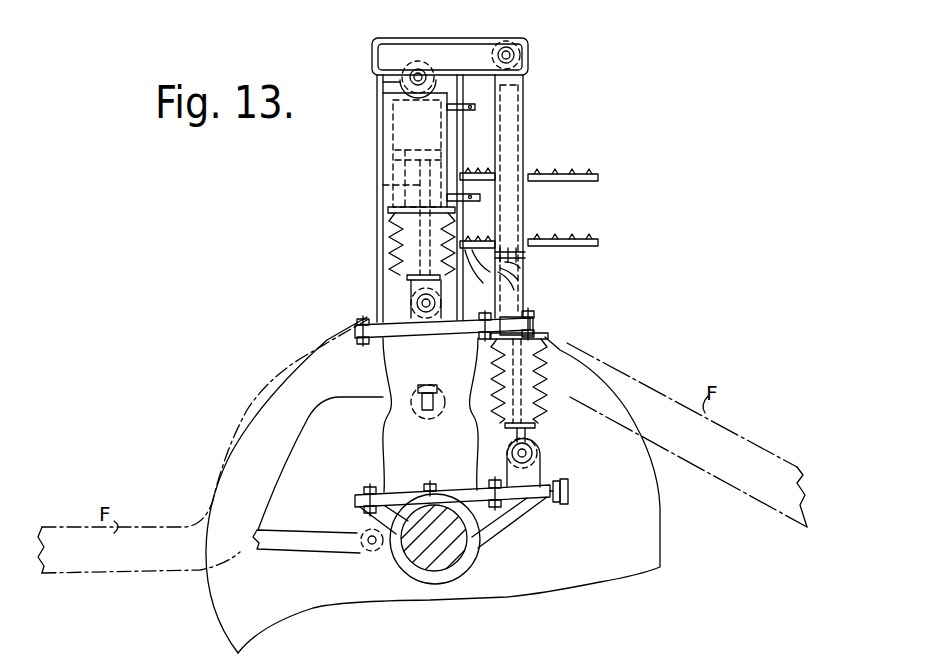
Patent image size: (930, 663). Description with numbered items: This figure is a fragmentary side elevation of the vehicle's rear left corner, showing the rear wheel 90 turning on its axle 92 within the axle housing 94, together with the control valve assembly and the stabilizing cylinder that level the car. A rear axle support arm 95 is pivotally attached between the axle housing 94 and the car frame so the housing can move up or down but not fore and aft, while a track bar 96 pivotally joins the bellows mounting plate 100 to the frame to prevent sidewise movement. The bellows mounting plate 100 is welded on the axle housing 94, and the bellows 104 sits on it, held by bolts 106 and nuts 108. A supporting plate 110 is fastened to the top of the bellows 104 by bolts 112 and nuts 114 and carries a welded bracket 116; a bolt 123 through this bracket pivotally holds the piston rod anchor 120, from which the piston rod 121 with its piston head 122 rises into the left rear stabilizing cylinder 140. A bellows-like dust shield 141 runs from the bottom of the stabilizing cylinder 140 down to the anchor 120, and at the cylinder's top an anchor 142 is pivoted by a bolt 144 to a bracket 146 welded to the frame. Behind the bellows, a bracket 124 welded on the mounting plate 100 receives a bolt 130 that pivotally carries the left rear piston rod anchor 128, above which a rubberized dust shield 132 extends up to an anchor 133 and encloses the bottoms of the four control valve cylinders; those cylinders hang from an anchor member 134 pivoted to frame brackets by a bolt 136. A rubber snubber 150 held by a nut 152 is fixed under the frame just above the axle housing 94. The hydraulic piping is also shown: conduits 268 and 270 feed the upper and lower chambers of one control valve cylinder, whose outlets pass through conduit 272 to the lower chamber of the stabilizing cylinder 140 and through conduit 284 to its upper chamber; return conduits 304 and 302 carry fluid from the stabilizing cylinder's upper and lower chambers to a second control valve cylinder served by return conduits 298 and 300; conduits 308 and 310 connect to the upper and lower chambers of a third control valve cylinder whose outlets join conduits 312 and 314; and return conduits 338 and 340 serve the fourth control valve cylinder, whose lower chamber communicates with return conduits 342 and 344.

The rear wheel 90 is at (660, 517).
The axle 92 is at (462, 545).
The axle housing 94 is at (472, 563).
The rear axle support arm 95 is at (305, 553).
The track bar 96 is at (566, 510).
The bellows mounting plate 100 is at (520, 503).
The bellows 104 is at (385, 446).
The bolt 106 is at (368, 482).
The nut 108 is at (365, 508).
The supporting plate 110 is at (503, 326).
The bolt 112 is at (357, 327).
The nut 114 is at (365, 338).
The bracket 116 is at (420, 295).
The piston rod anchor 120 is at (410, 306).
The piston rod 121 is at (395, 188).
The piston head 122 is at (398, 155).
The bolt 123 is at (420, 301).
The bracket 124 is at (541, 470).
The left rear piston rod anchor 128 is at (532, 447).
The bolt 130 is at (530, 453).
The dust shield 132 is at (543, 385).
The anchor 133 is at (536, 328).
The anchor member 134 is at (507, 45).
The bolt 136 is at (516, 55).
The left rear stabilizing cylinder 140 is at (383, 128).
The bellows-like dust shield 141 is at (400, 228).
The anchor 142 is at (395, 95).
The bolt 144 is at (421, 72).
The bracket 146 is at (398, 80).
The rubber snubber 150 is at (420, 432).
The nut 152 is at (428, 384).
The conduit 268 is at (556, 173).
The conduit 270 is at (565, 231).
The conduit 272 is at (492, 196).
The conduit 284 is at (461, 104).
The return conduit 298 is at (574, 173).
The return conduit 300 is at (575, 239).
The return conduit 302 is at (478, 197).
The return conduit 304 is at (478, 100).
The conduit 308 is at (537, 173).
The conduit 310 is at (537, 239).
The conduit 312 is at (510, 252).
The conduit 314 is at (470, 172).
The return conduit 338 is at (595, 175).
The return conduit 340 is at (590, 240).
The return conduit 342 is at (472, 255).
The return conduit 344 is at (470, 172).